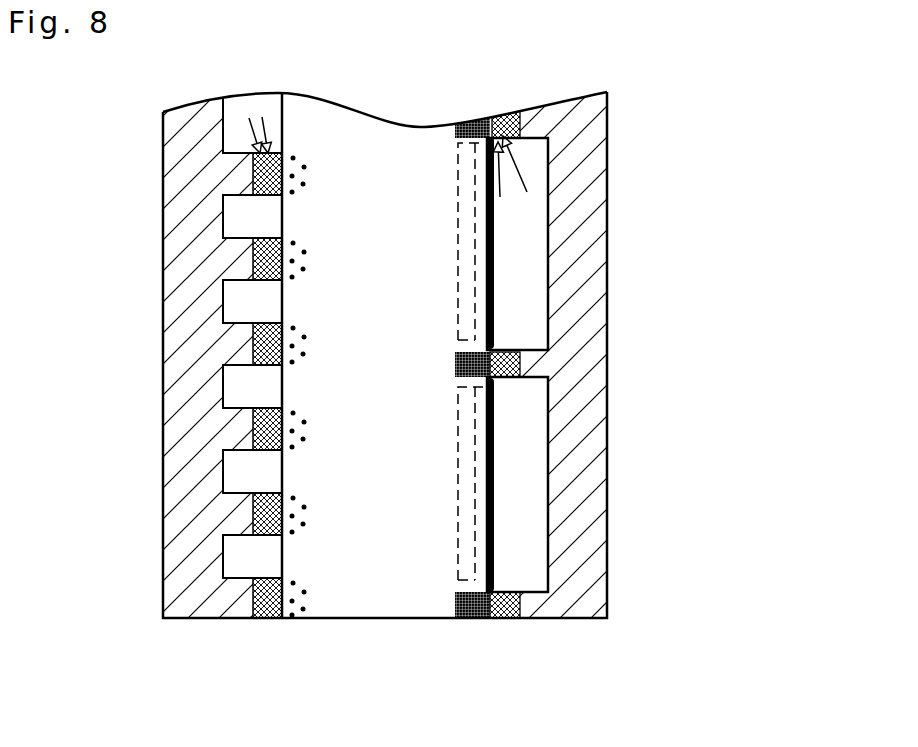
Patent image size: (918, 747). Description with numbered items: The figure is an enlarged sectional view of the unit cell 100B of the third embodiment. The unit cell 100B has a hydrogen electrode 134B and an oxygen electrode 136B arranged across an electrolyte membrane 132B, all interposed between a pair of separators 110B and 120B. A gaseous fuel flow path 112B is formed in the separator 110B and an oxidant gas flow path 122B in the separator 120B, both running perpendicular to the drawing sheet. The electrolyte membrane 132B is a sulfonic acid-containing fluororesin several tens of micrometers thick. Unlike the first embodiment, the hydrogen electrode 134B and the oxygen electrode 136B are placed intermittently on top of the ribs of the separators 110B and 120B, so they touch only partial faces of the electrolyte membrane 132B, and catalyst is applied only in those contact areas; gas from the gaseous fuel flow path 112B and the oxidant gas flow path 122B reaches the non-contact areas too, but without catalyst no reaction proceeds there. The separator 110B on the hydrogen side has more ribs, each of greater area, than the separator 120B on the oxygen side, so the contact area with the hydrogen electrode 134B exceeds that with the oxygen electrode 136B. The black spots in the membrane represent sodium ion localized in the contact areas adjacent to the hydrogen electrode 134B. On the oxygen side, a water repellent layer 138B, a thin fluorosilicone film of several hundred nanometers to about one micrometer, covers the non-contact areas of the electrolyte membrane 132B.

The unit cell 100B is at (663, 142).
The separator 110B is at (163, 400).
The gaseous fuel flow path 112B is at (237, 220).
The separator 120B is at (608, 392).
The oxidant gas flow path 122B is at (518, 265).
The electrolyte membrane 132B is at (390, 138).
The hydrogen electrode 134B is at (265, 619).
The oxygen electrode 136B is at (502, 619).
The water repellent layer 138B is at (497, 483).